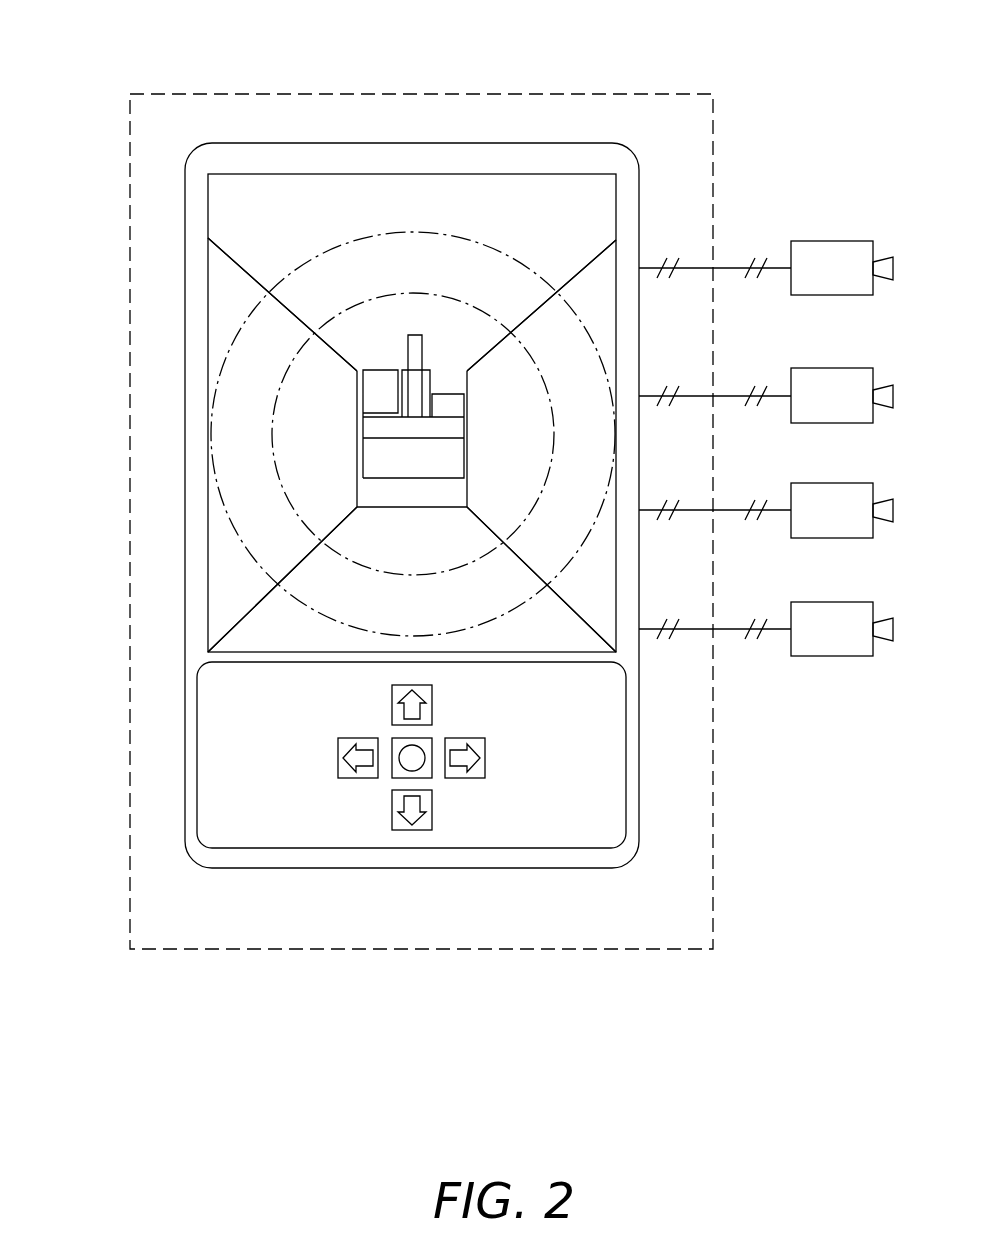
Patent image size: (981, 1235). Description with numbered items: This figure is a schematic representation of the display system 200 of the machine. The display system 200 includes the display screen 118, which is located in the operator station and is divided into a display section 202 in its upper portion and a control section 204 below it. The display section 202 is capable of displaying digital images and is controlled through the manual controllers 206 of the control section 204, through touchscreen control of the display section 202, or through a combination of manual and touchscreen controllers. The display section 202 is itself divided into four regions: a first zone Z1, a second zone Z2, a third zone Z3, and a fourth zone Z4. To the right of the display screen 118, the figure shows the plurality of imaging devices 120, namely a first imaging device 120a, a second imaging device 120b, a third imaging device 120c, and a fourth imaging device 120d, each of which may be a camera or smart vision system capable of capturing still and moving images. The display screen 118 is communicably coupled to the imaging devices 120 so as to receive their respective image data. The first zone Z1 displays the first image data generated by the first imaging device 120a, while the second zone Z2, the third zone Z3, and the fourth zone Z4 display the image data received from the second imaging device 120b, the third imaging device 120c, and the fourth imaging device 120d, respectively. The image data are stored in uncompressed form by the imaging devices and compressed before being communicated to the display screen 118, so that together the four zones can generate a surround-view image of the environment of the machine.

The display system 200 is at (748, 90).
The display section 202 is at (175, 203).
The display screen 118 is at (183, 338).
The control section 204 is at (176, 734).
The manual controllers 206 is at (509, 770).
The imaging devices 120 is at (781, 399).
The first imaging device 120a is at (860, 241).
The second imaging device 120b is at (852, 368).
The third imaging device 120c is at (857, 483).
The fourth imaging device 120d is at (856, 602).
The first zone Z1 is at (420, 200).
The second zone Z2 is at (343, 595).
The third zone Z3 is at (302, 458).
The fourth zone Z4 is at (600, 446).